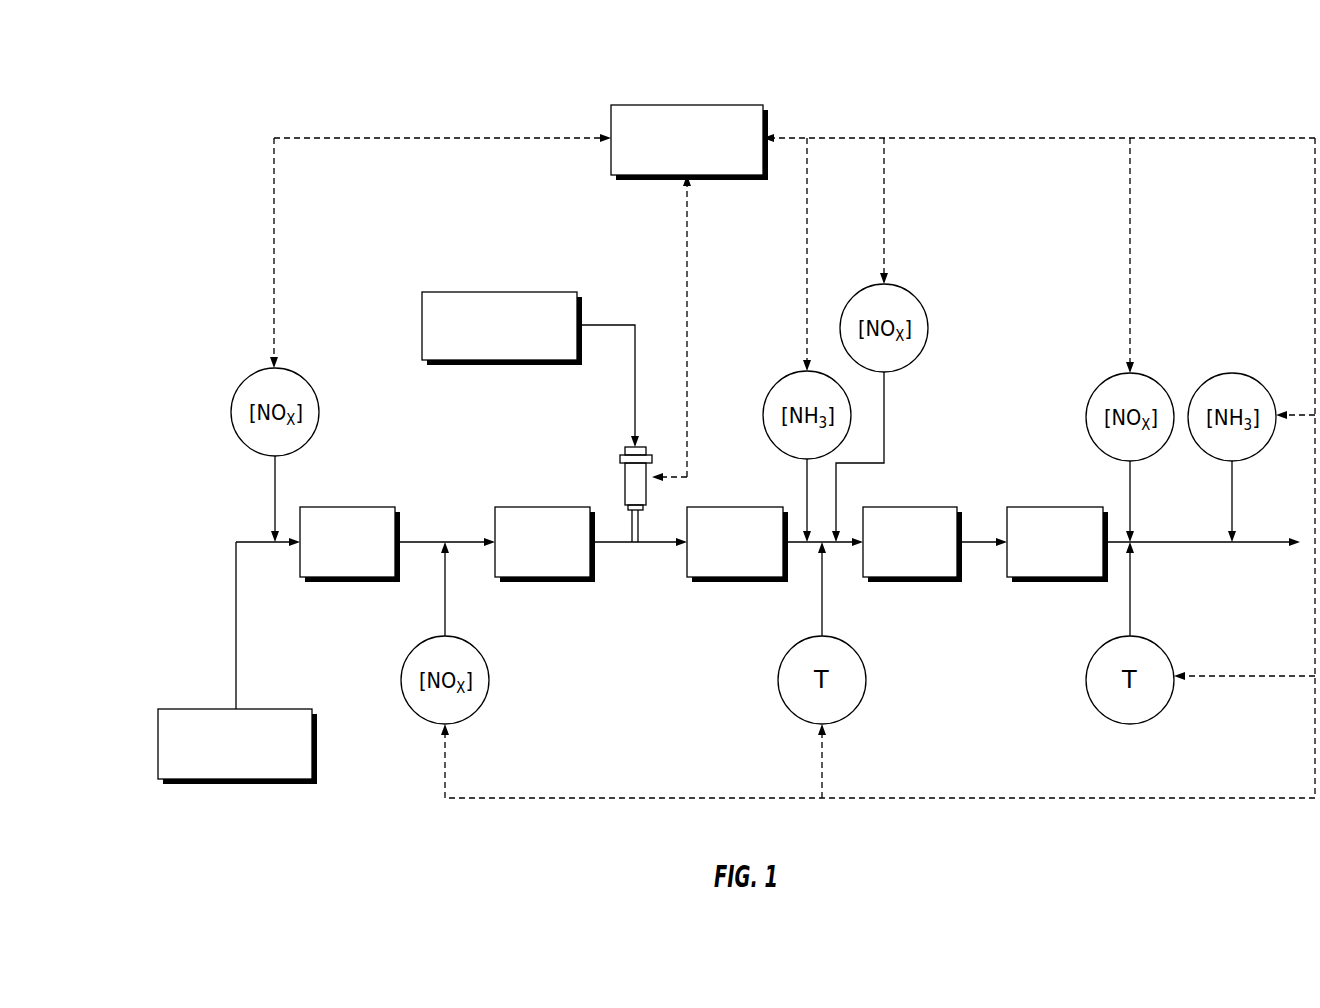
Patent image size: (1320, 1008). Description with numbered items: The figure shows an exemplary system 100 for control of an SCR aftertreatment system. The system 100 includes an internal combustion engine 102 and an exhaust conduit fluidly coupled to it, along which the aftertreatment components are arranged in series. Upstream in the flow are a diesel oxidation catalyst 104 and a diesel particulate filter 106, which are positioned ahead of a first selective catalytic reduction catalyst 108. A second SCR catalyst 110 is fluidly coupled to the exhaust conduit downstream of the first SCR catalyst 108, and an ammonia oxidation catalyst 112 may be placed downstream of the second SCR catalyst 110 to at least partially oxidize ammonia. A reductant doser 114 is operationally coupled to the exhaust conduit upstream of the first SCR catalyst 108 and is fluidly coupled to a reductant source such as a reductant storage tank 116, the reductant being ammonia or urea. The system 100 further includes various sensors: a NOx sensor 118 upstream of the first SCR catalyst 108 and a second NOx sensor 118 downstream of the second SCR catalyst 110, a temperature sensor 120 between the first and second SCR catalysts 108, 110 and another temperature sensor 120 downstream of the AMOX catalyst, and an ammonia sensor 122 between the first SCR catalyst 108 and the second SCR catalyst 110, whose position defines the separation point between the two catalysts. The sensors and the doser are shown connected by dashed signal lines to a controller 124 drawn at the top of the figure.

The system 100 is at (333, 70).
The internal combustion engine 102 is at (216, 708).
The diesel oxidation catalyst 104 is at (348, 506).
The diesel particulate filter 106 is at (543, 506).
The first selective catalytic reduction catalyst 108 is at (685, 561).
The second SCR catalyst 110 is at (940, 506).
The ammonia oxidation catalyst 112 is at (1056, 506).
The reductant doser 114 is at (625, 485).
The reductant storage tank 116 is at (422, 327).
The NOx sensor 118 is at (232, 410).
The temperature sensor 120 is at (779, 679).
The ammonia sensor 122 is at (790, 376).
The controller 124 is at (611, 157).